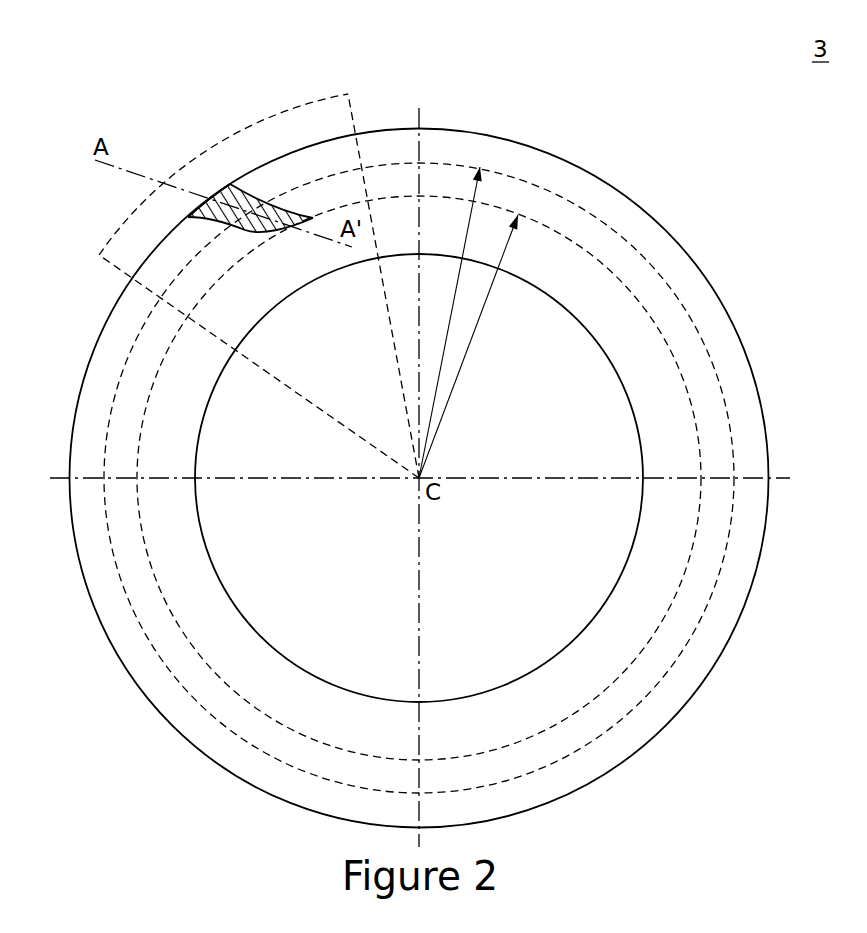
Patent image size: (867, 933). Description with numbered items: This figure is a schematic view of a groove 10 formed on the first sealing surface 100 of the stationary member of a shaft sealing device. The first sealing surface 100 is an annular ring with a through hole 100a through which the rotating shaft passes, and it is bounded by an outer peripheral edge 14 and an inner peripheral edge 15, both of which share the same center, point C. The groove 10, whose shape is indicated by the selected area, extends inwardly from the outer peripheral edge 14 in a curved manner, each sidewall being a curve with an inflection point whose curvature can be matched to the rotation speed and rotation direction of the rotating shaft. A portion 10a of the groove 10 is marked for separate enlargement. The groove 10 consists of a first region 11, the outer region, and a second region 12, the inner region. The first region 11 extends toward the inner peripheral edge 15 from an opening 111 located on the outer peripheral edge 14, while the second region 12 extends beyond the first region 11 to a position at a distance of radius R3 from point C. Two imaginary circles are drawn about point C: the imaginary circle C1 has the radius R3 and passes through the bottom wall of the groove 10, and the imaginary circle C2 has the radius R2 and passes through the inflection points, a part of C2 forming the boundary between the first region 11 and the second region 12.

The groove 10 is at (201, 131).
The portion of the groove 10a is at (313, 99).
The first region 11 is at (247, 186).
The second region 12 is at (292, 212).
The opening 111 is at (205, 201).
The outer peripheral edge 14 is at (88, 363).
The inner peripheral edge 15 is at (213, 560).
The first sealing surface 100 is at (413, 455).
The through hole 100a is at (582, 352).
The imaginary circle C1 is at (583, 248).
The imaginary circle C2 is at (512, 173).
The radius R2 is at (450, 322).
The radius R3 is at (468, 346).